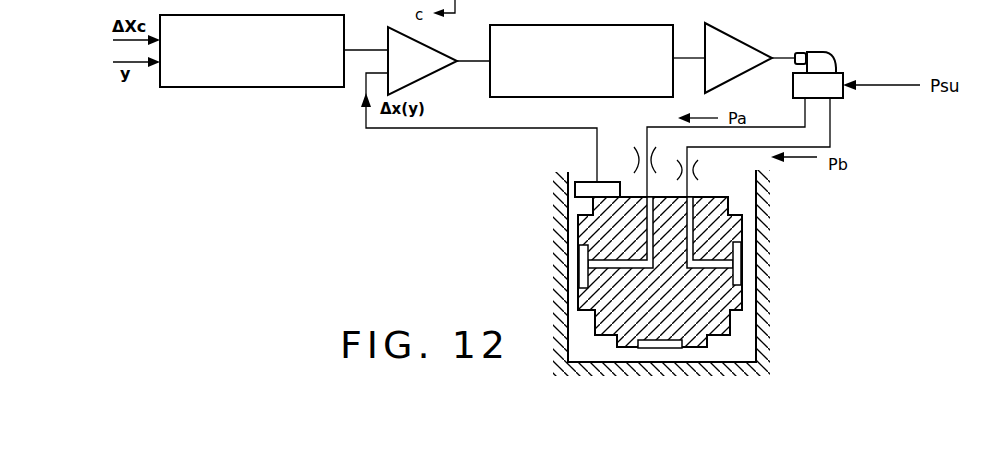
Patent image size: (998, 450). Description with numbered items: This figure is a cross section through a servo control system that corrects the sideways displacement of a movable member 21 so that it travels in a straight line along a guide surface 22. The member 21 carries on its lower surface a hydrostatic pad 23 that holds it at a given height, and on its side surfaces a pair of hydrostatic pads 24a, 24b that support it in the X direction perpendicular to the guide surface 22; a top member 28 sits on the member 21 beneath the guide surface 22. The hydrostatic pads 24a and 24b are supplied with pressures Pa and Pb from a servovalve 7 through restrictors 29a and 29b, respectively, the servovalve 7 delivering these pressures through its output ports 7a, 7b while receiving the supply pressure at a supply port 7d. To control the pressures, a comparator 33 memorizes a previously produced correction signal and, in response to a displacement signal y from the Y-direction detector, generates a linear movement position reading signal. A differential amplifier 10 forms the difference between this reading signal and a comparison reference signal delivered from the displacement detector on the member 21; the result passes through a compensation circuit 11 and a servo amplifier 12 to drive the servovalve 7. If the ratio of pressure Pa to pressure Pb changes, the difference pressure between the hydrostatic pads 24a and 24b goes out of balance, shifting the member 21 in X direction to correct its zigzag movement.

The comparator 33 is at (233, 14).
The differential amplifier 10 is at (424, 80).
The compensation circuit 11 is at (594, 25).
The servo amplifier 12 is at (732, 40).
The servovalve 7 is at (840, 45).
The first output port 7a is at (805, 113).
The second output port 7b is at (830, 117).
The supply port 7d is at (880, 84).
The member 21 is at (608, 338).
The guide surface 22 is at (581, 163).
The piston top member 28 is at (606, 182).
The restrictor 29a is at (636, 142).
The restrictor 29b is at (696, 173).
The hydrostatic pad 24a is at (578, 264).
The hydrostatic pad 24b is at (742, 268).
The hydrostatic pad 23 is at (683, 350).